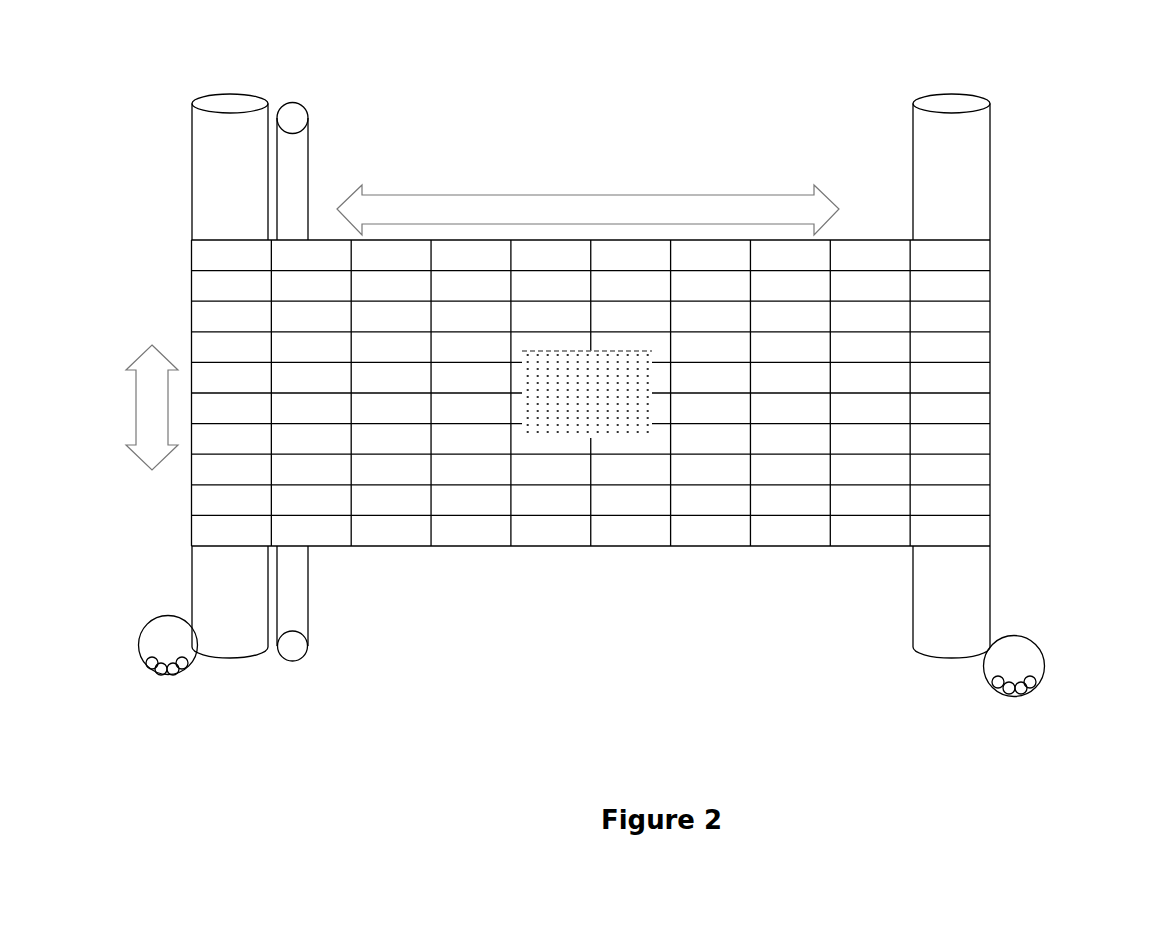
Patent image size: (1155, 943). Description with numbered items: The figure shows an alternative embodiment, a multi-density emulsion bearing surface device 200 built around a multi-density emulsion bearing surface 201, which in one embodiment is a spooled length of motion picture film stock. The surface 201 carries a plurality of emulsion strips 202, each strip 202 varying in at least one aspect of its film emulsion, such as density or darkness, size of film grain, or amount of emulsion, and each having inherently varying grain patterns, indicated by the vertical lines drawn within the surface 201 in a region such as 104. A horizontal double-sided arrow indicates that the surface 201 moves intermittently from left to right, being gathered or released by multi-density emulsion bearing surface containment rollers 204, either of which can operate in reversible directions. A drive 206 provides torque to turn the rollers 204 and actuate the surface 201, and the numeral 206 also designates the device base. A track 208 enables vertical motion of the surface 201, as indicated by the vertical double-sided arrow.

The multi-density emulsion bearing surface device 200 is at (627, 403).
The multi-density emulsion bearing surface 201 is at (482, 327).
The image region 104 is at (629, 390).
The emulsion strips 202 is at (970, 382).
The multi-density emulsion bearing surface containment rollers 204 is at (258, 571).
The drive 206 is at (212, 688).
The track 208 is at (305, 654).